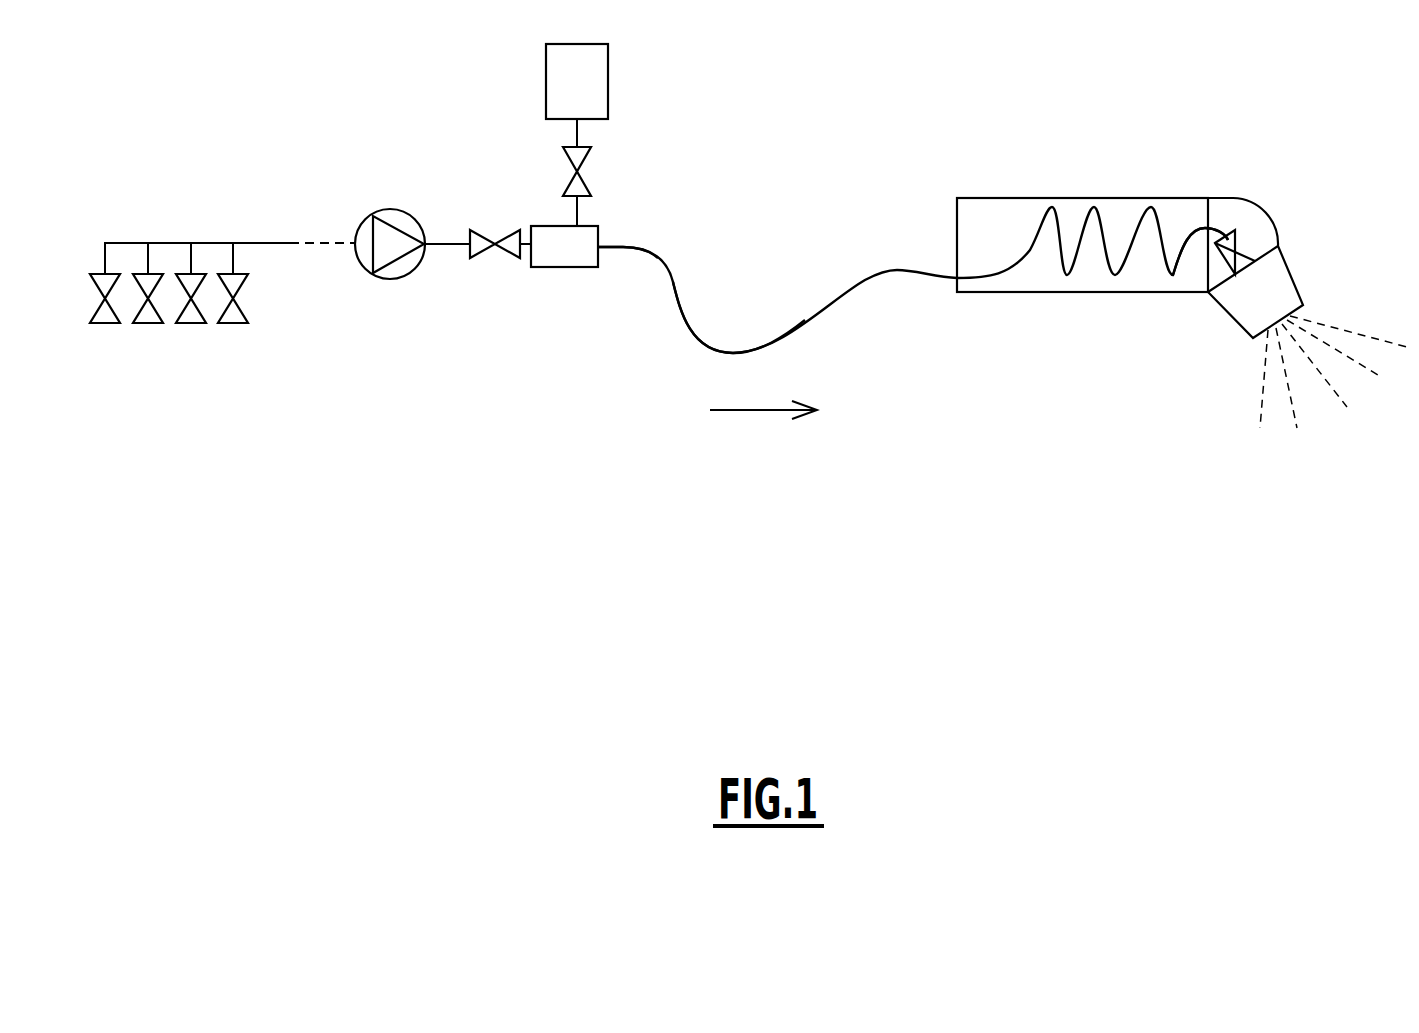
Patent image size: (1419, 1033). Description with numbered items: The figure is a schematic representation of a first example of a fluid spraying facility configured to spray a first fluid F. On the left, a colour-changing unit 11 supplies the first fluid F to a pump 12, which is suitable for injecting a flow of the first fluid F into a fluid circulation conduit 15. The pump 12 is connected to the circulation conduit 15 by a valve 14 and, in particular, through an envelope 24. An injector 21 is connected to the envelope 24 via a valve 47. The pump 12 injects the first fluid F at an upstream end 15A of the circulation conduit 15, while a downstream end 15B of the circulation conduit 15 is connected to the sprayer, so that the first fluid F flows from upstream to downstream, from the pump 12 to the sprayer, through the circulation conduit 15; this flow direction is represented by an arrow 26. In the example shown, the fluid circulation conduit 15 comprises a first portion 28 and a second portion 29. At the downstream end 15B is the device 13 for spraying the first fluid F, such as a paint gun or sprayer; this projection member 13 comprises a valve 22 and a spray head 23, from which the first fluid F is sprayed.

The colour-changing unit 11 is at (160, 352).
The pump 12 is at (397, 208).
The device for spraying the first fluid 13 is at (1092, 223).
The valve 14 is at (493, 276).
The fluid circulation conduit 15 is at (897, 268).
The upstream end 15A is at (612, 274).
The downstream end 15B is at (1224, 207).
The injector 21 is at (603, 92).
The valve 22 is at (1255, 240).
The spray head 23 is at (1316, 274).
The envelope 24 is at (566, 268).
The arrow 26 is at (765, 412).
The first portion 28 is at (733, 350).
The second portion 29 is at (1163, 253).
The valve 47 is at (604, 172).
The first fluid F is at (1333, 373).